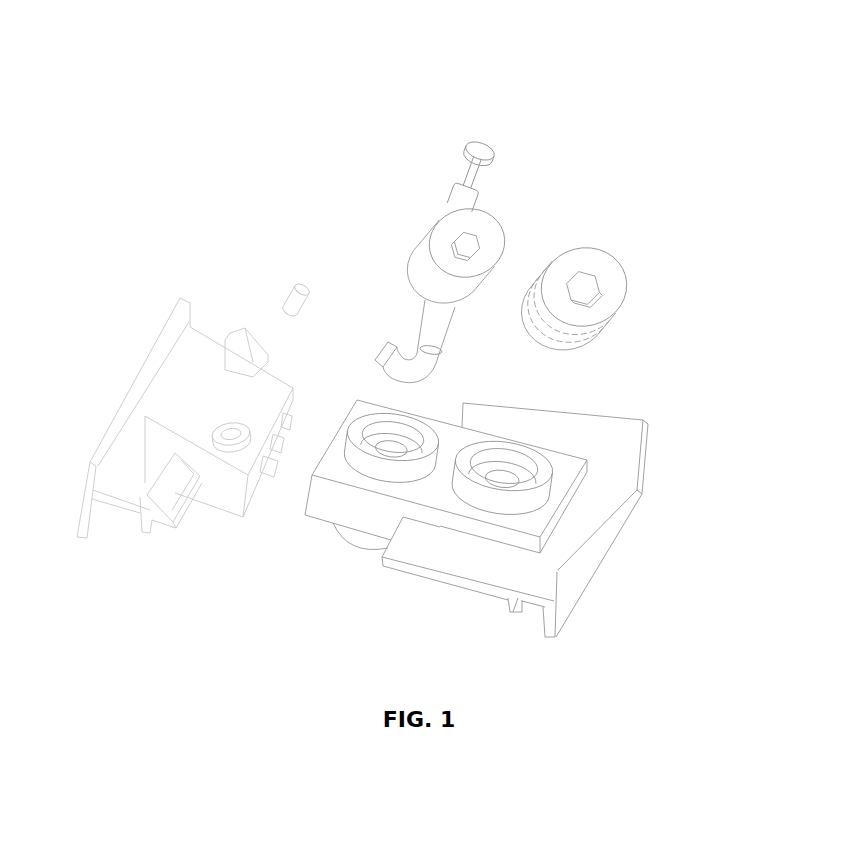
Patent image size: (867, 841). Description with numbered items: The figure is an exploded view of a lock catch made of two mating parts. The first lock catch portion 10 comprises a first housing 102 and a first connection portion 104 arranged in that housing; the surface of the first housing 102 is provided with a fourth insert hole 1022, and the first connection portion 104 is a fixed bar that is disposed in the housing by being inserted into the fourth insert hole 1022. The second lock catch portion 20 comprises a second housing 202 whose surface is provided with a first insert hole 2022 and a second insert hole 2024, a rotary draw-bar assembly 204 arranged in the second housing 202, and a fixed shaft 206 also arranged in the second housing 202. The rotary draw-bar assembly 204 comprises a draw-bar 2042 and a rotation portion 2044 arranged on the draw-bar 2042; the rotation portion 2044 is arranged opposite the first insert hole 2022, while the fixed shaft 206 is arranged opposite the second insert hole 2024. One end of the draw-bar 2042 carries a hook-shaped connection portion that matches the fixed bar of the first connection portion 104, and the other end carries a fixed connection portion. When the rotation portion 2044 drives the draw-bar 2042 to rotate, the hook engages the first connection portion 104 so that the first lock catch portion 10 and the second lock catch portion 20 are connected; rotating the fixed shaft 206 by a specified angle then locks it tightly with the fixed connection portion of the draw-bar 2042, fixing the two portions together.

The first lock catch portion 10 is at (57, 92).
The first housing 102 is at (193, 400).
The fourth insert hole 1022 is at (230, 432).
The first connection portion 104 is at (304, 287).
The second lock catch portion 20 is at (745, 53).
The second housing 202 is at (780, 98).
The first insert hole 2022 is at (402, 430).
The second insert hole 2024 is at (505, 476).
The rotary draw-bar assembly 204 is at (575, 98).
The draw-bar 2042 is at (468, 193).
The rotation portion 2044 is at (485, 240).
The fixed shaft 206 is at (560, 258).